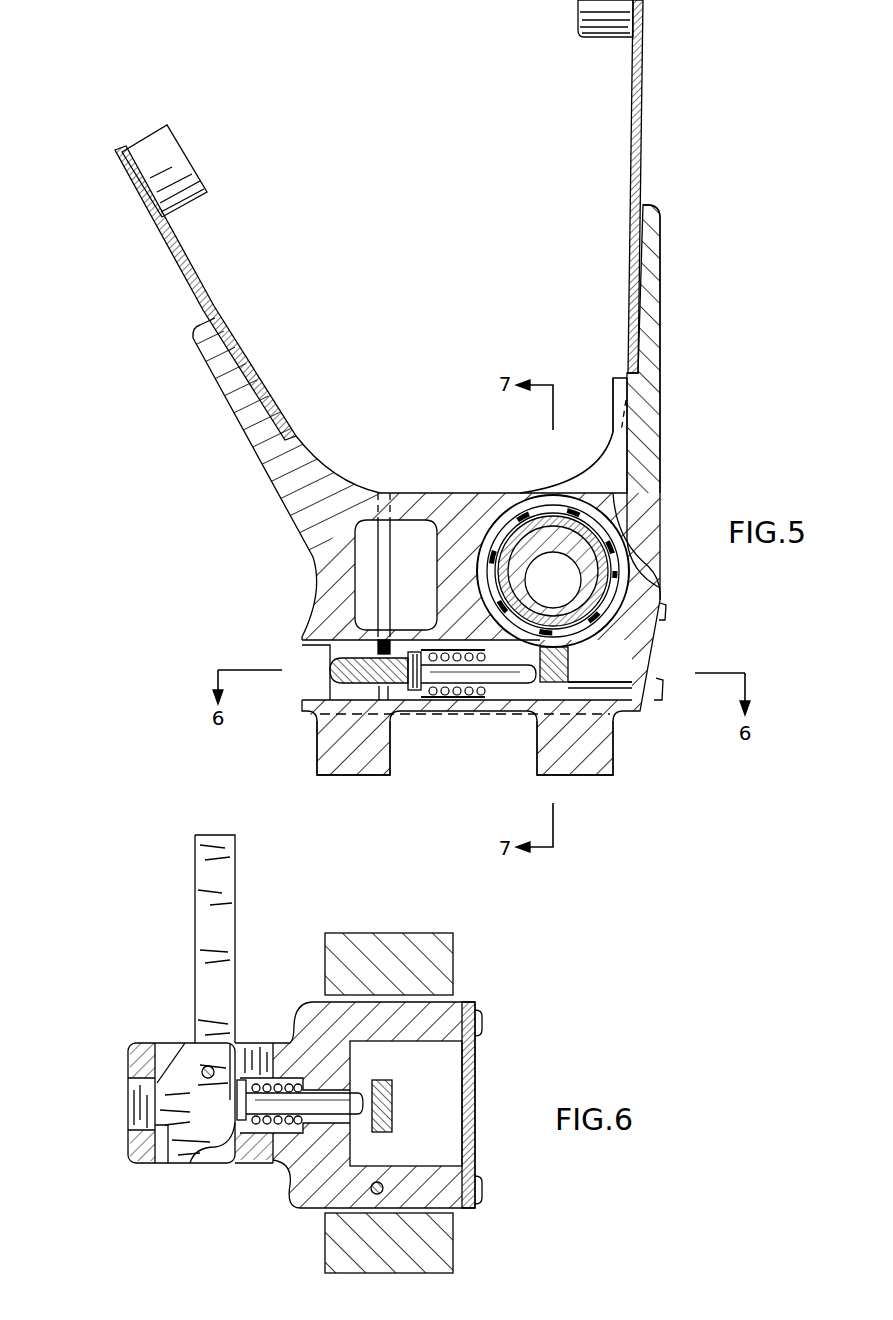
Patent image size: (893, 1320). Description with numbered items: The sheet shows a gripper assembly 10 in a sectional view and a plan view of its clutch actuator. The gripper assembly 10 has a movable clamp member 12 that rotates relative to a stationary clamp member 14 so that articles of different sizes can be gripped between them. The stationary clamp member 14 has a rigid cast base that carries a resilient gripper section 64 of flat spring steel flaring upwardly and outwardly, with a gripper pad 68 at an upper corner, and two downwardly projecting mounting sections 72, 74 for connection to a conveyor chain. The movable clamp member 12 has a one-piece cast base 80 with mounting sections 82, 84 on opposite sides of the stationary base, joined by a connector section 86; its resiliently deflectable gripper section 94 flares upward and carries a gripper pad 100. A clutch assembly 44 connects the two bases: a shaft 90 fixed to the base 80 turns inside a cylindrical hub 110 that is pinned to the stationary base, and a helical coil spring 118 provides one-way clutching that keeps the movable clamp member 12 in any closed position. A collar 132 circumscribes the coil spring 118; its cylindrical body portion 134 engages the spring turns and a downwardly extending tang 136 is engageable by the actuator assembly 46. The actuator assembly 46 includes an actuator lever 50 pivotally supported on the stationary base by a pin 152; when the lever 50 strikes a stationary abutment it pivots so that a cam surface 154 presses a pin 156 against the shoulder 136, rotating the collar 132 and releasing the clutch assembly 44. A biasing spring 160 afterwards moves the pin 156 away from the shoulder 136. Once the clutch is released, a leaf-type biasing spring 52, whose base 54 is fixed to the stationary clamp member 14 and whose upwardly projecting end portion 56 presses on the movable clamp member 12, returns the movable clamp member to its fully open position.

In FIG. 5, the gripper assembly 10 is at (125, 499).
In FIG. 5, the movable clamp member 12 is at (651, 182).
In FIG. 5, the stationary clamp member 14 is at (192, 378).
In FIG. 5, the clutch assembly 44 is at (553, 500).
In FIG. 5, the actuator assembly 46 is at (330, 664).
In FIG. 6, the actuator assembly 46 is at (265, 966).
In FIG. 5, the actuator lever 50 is at (330, 688).
In FIG. 6, the actuator lever 50 is at (210, 915).
In FIG. 5, the biasing spring 52 is at (660, 550).
In FIG. 6, the biasing spring 52 is at (477, 1106).
In FIG. 5, the base of biasing spring 54 is at (640, 590).
In FIG. 5, the end portion of biasing spring 56 is at (620, 395).
In FIG. 5, the gripper section 64 is at (186, 258).
In FIG. 5, the gripper pad 68 is at (163, 160).
In FIG. 5, the mounting section 72 is at (363, 757).
In FIG. 5, the mounting section 74 is at (585, 753).
In FIG. 5, the base of movable clamp member 80 is at (660, 340).
In FIG. 6, the mounting section 82 is at (438, 1240).
In FIG. 6, the mounting section 84 is at (444, 957).
In FIG. 5, the connector section 86 is at (652, 270).
In FIG. 5, the shaft 90 is at (556, 580).
In FIG. 5, the gripper section 94 is at (637, 95).
In FIG. 5, the gripper pad 100 is at (592, 17).
In FIG. 5, the cylindrical hub 110 is at (517, 568).
In FIG. 5, the helical coil spring 118 is at (535, 535).
In FIG. 5, the collar 132 is at (617, 613).
In FIG. 5, the cylindrical body portion 134 is at (592, 642).
In FIG. 5, the tang 136 is at (566, 674).
In FIG. 6, the tang 136 is at (392, 1094).
In FIG. 5, the pin 152 is at (386, 566).
In FIG. 6, the pin 152 is at (206, 1066).
In FIG. 6, the cam surface 154 is at (205, 1140).
In FIG. 5, the pin 156 is at (503, 674).
In FIG. 6, the pin 156 is at (248, 1130).
In FIG. 6, the biasing spring 160 is at (297, 1127).